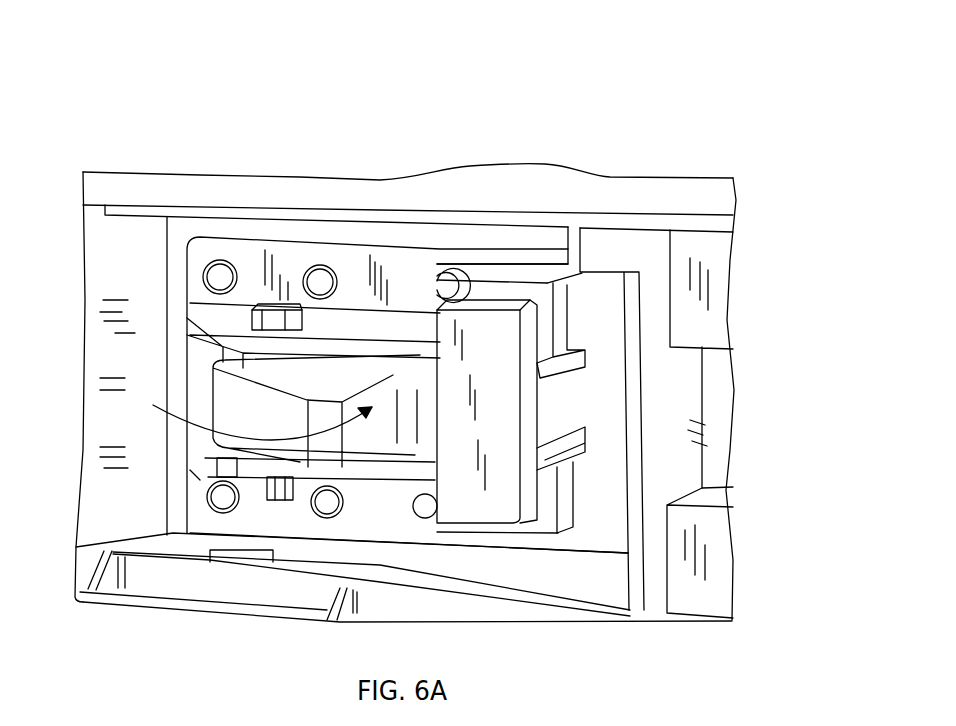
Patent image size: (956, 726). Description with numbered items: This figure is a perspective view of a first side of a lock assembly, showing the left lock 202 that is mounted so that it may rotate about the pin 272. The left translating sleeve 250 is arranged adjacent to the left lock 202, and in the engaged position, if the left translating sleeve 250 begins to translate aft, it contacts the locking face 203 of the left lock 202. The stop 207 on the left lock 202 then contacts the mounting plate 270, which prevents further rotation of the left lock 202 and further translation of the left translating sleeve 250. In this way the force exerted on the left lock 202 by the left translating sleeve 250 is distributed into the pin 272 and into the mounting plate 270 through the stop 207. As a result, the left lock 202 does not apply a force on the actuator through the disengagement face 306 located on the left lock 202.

The left lock 202 is at (672, 143).
The locking face 203 is at (577, 380).
The stop 207 is at (498, 300).
The left translating sleeve 250 is at (703, 412).
The mounting plate 270 is at (555, 322).
The pin 272 is at (440, 352).
The disengagement face 306 is at (370, 440).